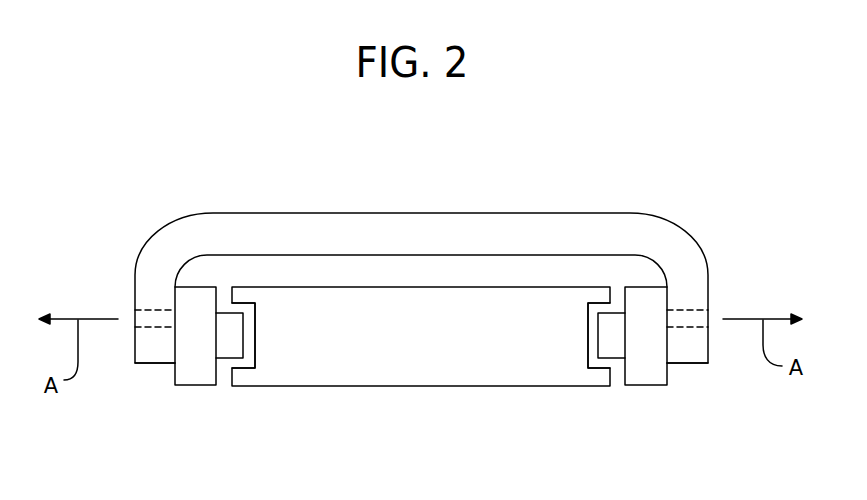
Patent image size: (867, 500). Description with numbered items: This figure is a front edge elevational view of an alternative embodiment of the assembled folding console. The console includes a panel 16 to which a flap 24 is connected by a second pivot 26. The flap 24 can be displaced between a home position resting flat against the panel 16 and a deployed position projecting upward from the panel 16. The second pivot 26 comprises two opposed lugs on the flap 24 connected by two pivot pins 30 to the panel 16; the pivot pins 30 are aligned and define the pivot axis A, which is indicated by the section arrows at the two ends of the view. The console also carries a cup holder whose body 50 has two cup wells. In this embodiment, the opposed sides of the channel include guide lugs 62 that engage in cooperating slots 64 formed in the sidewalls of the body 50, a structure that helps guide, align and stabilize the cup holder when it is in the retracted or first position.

The panel 16 is at (193, 385).
The flap 24 is at (504, 227).
The second pivot 26 is at (127, 378).
The pivot pins 30 is at (150, 300).
The body 50 is at (408, 347).
The guide lugs 62 is at (227, 332).
The slots 64 is at (254, 321).